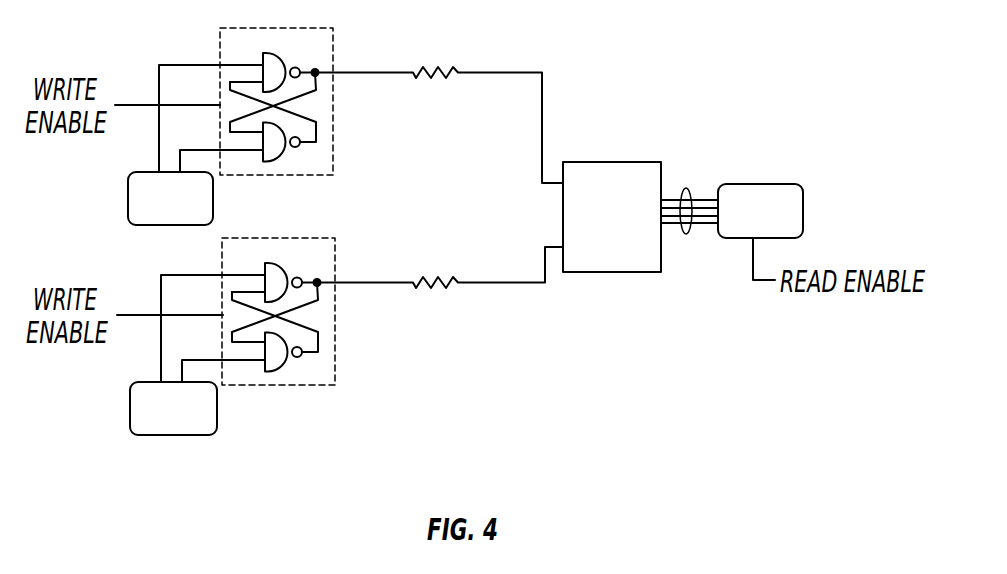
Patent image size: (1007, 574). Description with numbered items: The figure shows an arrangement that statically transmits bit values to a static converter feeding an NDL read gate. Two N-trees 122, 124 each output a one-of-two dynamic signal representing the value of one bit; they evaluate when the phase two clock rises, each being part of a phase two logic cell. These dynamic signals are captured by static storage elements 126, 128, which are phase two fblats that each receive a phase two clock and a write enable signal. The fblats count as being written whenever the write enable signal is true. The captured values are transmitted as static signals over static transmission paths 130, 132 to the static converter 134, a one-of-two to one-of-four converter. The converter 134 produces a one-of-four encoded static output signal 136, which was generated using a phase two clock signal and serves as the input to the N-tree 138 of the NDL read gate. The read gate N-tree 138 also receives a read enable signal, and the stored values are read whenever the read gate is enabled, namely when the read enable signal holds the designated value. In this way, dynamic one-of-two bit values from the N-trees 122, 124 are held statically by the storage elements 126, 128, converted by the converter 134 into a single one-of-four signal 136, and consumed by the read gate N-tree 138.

The N-tree 122 is at (170, 436).
The N-tree 124 is at (168, 226).
The static storage element 126 is at (310, 385).
The static storage element 128 is at (315, 175).
The static transmission path 130 is at (512, 282).
The static transmission path 132 is at (522, 72).
The static converter 134 is at (583, 162).
The static converter output signal 136 is at (687, 190).
The N-tree of the NDL read gate 138 is at (803, 212).